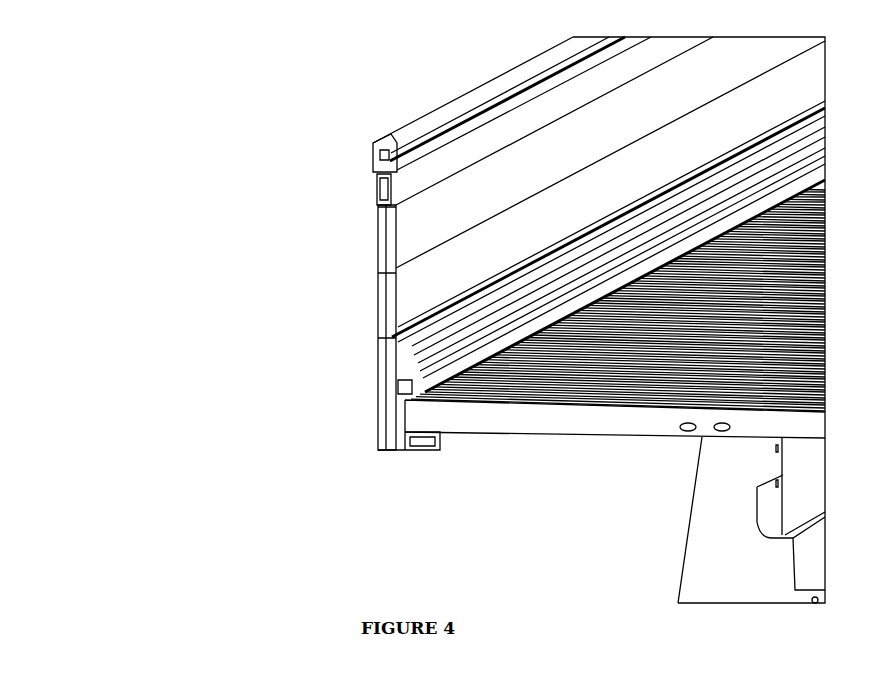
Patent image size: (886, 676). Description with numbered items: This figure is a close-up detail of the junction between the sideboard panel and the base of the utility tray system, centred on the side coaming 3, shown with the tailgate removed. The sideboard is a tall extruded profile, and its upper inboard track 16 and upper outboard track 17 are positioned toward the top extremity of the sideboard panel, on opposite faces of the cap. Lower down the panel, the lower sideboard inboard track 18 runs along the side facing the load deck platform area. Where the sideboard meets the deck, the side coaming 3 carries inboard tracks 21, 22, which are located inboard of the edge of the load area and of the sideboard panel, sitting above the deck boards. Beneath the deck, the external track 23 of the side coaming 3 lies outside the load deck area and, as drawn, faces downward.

The side coaming 3 is at (401, 387).
The upper inboard track 16 is at (410, 172).
The upper outboard track 17 is at (375, 172).
The lower sideboard inboard track 18 is at (427, 310).
The side coaming inboard track 21 is at (408, 356).
The side coaming inboard track 22 is at (622, 274).
The external track 23 is at (420, 447).